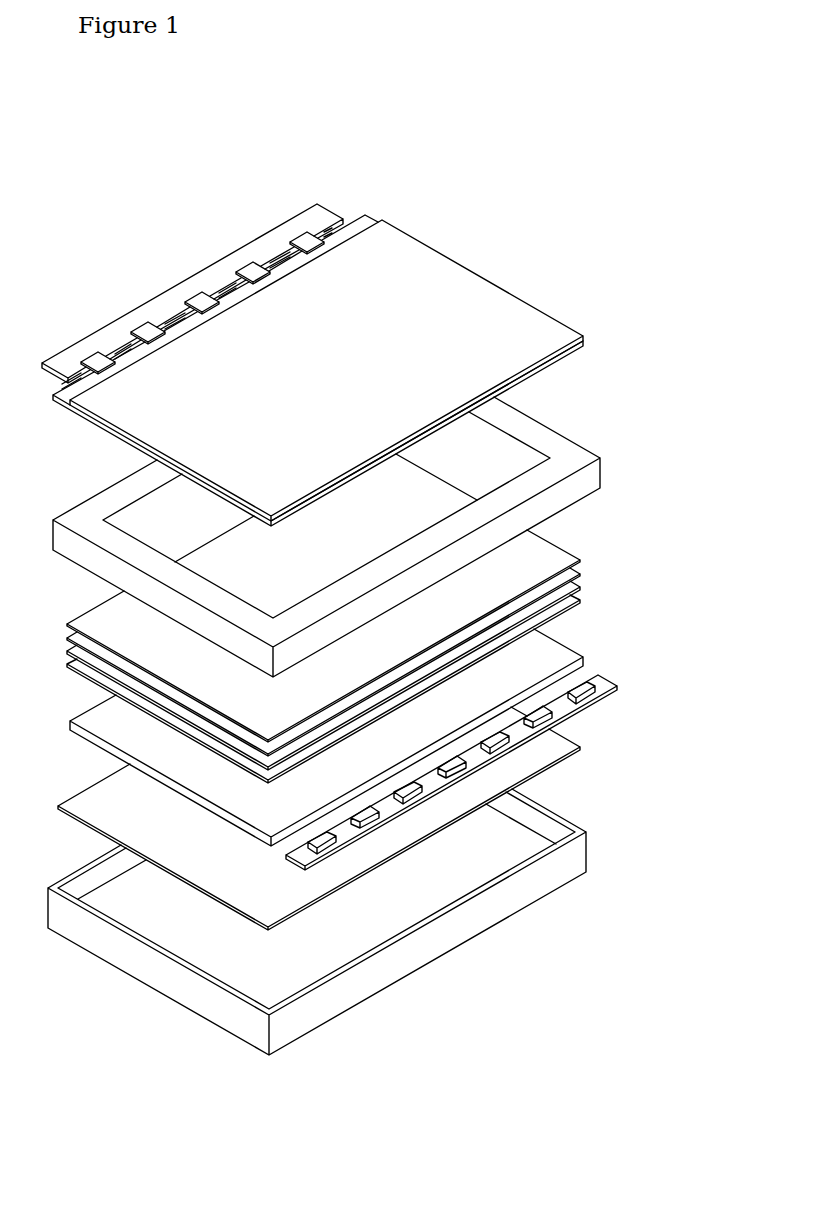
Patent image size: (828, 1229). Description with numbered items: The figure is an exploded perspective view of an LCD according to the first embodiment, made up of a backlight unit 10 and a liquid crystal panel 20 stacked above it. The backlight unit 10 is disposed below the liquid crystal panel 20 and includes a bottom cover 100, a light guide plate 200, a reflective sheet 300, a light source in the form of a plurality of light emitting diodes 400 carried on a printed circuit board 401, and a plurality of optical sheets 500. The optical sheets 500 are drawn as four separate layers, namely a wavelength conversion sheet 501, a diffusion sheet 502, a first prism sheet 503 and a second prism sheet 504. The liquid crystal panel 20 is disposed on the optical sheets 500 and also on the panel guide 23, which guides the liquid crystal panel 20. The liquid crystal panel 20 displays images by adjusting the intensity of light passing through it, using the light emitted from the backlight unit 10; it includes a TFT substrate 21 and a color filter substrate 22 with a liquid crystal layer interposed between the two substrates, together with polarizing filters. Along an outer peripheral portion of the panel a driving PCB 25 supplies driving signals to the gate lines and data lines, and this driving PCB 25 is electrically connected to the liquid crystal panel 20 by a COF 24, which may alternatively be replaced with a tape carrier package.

The backlight unit 10 is at (390, 754).
The liquid crystal panel 20 is at (308, 332).
The TFT substrate 21 is at (364, 213).
The color filter substrate 22 is at (410, 238).
The panel guide 23 is at (600, 470).
The COF (chip on film) 24 is at (293, 238).
The driving PCB 25 is at (67, 352).
The bottom cover 100 is at (583, 850).
The light guide plate 200 is at (568, 652).
The reflective sheet 300 is at (570, 747).
The light emitting diodes 400 is at (476, 770).
The printed circuit board 401 is at (592, 687).
The optical sheets 500 is at (378, 618).
The wavelength conversion sheet 501 is at (582, 598).
The diffusion sheet 502 is at (582, 586).
The first prism sheet 503 is at (582, 573).
The second prism sheet 504 is at (648, 612).